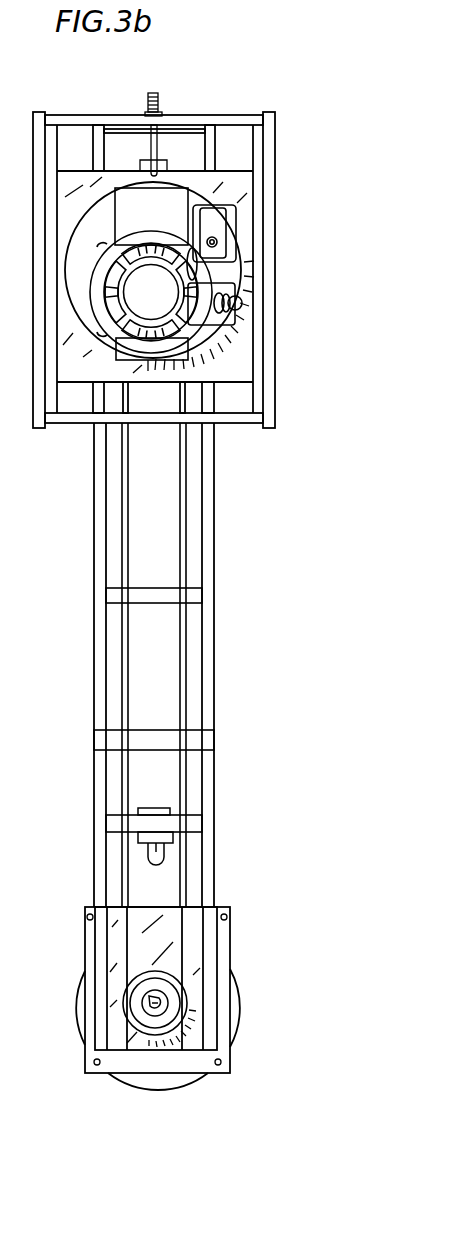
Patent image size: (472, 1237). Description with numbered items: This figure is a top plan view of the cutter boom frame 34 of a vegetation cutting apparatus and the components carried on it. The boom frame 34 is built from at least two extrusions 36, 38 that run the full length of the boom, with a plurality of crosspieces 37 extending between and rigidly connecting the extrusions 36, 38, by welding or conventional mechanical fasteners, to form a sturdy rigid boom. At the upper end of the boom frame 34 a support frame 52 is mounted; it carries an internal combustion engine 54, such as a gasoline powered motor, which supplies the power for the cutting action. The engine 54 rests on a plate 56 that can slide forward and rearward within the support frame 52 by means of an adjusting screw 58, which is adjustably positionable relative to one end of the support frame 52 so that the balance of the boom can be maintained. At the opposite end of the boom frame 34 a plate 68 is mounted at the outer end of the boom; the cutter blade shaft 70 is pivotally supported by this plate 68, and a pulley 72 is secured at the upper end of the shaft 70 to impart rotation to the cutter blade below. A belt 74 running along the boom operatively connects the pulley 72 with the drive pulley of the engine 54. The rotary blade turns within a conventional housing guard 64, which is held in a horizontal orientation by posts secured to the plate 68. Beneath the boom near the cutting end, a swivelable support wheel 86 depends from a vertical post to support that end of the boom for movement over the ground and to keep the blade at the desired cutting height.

The cutter boom frame 34 is at (175, 665).
The extrusion 36 is at (215, 633).
The crosspiece 37 is at (197, 595).
The extrusion 38 is at (94, 670).
The support frame 52 is at (270, 142).
The internal combustion engine 54 is at (203, 282).
The plate 56 is at (245, 357).
The adjusting screw 58 is at (153, 147).
The housing guard 64 is at (182, 1030).
The plate 68 is at (197, 930).
The cutter blade shaft 70 is at (168, 1005).
The pulley 72 is at (170, 985).
The belt 74 is at (185, 798).
The swivelable support wheel 86 is at (163, 848).